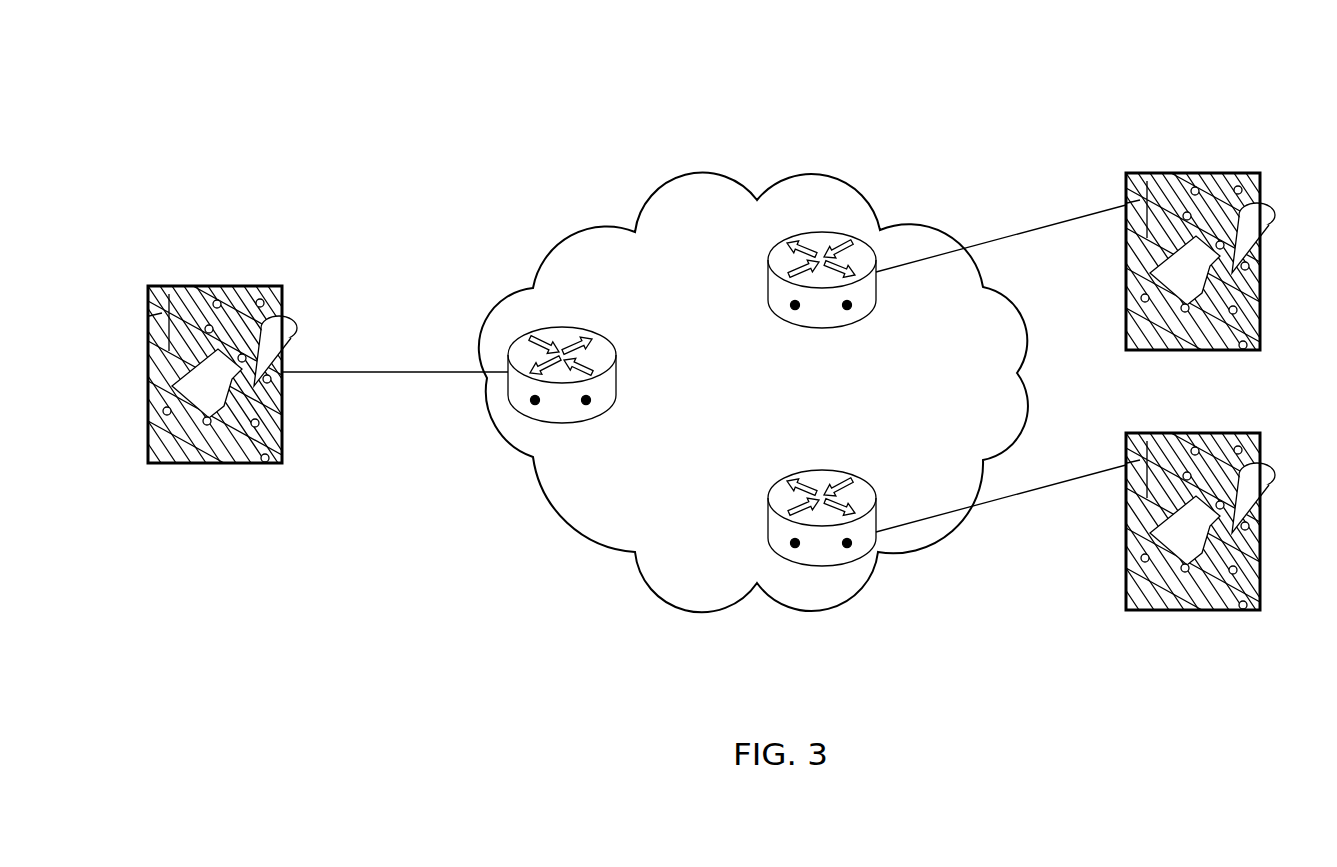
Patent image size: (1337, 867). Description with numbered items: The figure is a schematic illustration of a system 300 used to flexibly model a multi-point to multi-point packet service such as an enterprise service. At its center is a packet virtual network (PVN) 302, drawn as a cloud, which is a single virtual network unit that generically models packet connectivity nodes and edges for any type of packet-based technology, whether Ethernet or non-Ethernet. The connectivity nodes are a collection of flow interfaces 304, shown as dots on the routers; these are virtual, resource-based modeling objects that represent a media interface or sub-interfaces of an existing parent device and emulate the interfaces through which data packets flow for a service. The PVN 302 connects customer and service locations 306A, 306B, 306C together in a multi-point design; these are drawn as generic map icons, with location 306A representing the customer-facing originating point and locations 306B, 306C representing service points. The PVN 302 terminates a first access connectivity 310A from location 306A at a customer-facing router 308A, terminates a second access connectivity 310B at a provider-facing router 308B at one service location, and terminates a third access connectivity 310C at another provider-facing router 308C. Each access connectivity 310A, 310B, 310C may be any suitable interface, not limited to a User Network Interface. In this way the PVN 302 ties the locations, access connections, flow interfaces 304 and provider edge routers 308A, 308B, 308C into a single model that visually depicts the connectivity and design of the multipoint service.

The system 300 is at (350, 72).
The packet virtual network (PVN) 302 is at (568, 232).
The flow interfaces 304 is at (586, 404).
The customer location 306A is at (193, 286).
The service location 306B is at (1200, 433).
The service location 306C is at (1200, 173).
The router 308A is at (503, 318).
The router 308B is at (862, 555).
The router 308C is at (828, 232).
The first access connectivity 310A is at (352, 372).
The second access connectivity 310B is at (1052, 488).
The third access connectivity 310C is at (1040, 193).